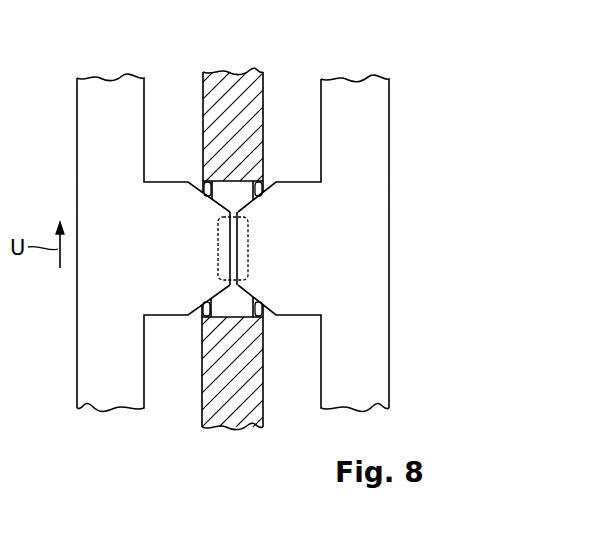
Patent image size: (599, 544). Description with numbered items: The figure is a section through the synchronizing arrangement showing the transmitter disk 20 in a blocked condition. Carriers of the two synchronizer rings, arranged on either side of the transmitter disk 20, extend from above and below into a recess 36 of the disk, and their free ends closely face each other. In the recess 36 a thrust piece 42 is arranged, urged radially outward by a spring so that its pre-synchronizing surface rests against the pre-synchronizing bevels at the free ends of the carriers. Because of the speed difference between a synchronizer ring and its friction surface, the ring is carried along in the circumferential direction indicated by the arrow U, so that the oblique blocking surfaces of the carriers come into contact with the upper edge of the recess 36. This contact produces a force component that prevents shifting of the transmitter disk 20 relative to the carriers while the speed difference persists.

The transmitter disk 20 is at (229, 92).
The recess 36 is at (223, 305).
The thrust piece 42 is at (243, 244).